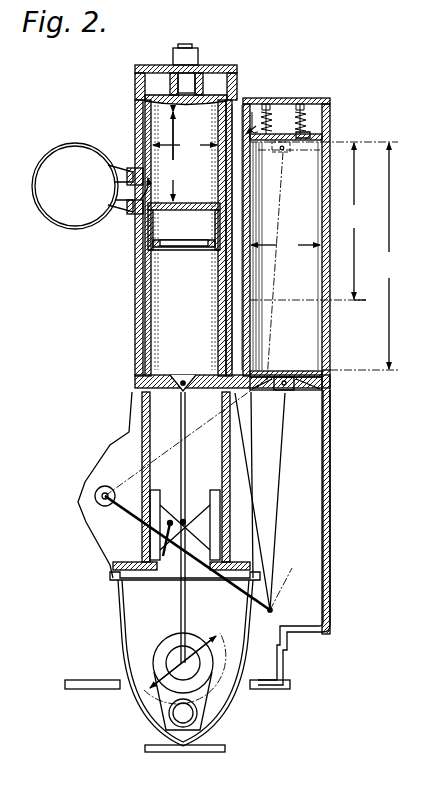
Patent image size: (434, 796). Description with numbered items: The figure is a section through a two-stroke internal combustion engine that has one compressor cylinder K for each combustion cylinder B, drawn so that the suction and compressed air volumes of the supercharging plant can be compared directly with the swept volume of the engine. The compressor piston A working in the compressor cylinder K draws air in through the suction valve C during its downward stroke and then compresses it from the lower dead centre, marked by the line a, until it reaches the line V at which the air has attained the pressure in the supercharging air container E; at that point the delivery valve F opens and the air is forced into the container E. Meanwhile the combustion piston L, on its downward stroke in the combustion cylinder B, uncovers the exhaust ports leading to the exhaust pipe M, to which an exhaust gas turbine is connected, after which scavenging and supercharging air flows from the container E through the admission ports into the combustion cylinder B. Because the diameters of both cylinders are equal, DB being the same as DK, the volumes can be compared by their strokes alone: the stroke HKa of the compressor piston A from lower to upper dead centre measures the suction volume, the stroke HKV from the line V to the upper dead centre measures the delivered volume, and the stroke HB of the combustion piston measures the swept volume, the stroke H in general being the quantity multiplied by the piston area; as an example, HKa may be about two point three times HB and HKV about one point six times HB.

The combustion cylinder B is at (140, 285).
The exhaust pipe M is at (80, 143).
The combustion piston L is at (168, 212).
The supercharging air container E is at (240, 298).
The compressor cylinder K is at (331, 324).
The delivery valve F is at (256, 130).
The suction valve C is at (307, 130).
The line v V is at (360, 311).
The line a is at (331, 373).
The compressor piston A is at (318, 390).
The stroke H is at (187, 670).
The diameter of combustion cylinder DB is at (185, 146).
The stroke of combustion piston HB is at (173, 156).
The diameter of compressor cylinder DK is at (285, 246).
The compressor stroke from line v to upper dead centre HKV is at (308, 221).
The compressor stroke from lower to upper dead centre HKa is at (361, 256).